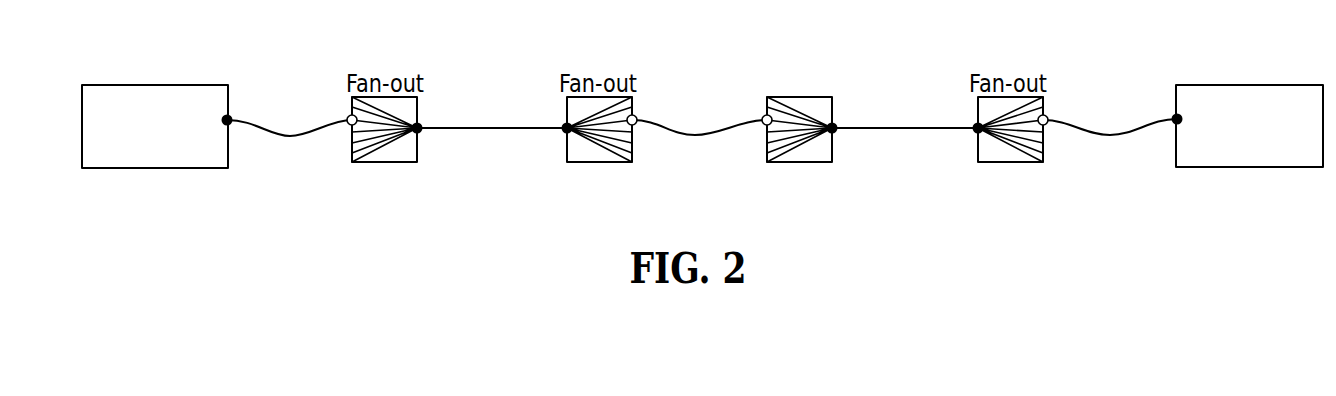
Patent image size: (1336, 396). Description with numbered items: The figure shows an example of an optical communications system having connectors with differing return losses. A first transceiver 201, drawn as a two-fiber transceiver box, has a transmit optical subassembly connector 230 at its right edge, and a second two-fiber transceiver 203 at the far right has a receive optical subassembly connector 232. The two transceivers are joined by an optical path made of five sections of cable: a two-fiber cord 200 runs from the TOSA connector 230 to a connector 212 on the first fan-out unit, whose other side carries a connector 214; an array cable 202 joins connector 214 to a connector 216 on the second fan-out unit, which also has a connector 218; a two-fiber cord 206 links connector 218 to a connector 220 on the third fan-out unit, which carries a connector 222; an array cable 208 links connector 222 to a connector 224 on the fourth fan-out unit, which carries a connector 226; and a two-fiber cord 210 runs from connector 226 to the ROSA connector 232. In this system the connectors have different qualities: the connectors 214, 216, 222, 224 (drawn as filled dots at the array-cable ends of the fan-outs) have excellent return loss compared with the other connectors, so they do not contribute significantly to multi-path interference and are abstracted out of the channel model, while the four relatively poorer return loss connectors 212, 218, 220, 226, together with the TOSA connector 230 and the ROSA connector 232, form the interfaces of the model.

The cable section 200 is at (287, 132).
The first transceiver 201 is at (133, 154).
The cable section 202 is at (482, 126).
The 2-fiber transceiver 203 is at (1229, 150).
The cable section 206 is at (695, 131).
The cable section 208 is at (893, 127).
The cable section 210 is at (1107, 133).
The connector 212 is at (349, 124).
The connector 214 is at (417, 128).
The connector 216 is at (567, 128).
The connector 218 is at (635, 124).
The connector 220 is at (764, 124).
The connector 222 is at (832, 128).
The connector 224 is at (978, 128).
The connector 226 is at (1046, 124).
The transmit optical subassembly (TOSA) connector 230 is at (227, 120).
The receive optical subassembly (ROSA) connector 232 is at (1177, 119).